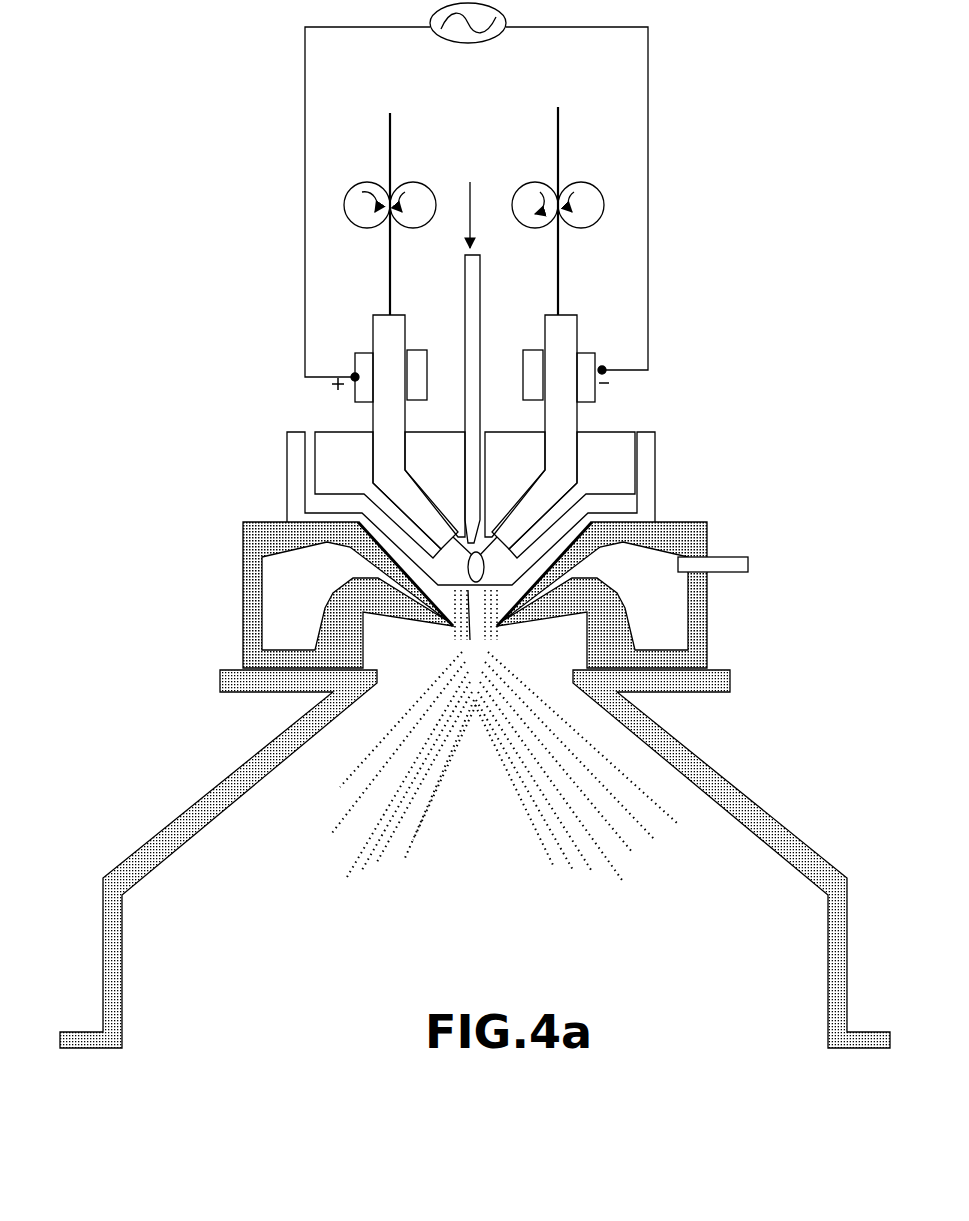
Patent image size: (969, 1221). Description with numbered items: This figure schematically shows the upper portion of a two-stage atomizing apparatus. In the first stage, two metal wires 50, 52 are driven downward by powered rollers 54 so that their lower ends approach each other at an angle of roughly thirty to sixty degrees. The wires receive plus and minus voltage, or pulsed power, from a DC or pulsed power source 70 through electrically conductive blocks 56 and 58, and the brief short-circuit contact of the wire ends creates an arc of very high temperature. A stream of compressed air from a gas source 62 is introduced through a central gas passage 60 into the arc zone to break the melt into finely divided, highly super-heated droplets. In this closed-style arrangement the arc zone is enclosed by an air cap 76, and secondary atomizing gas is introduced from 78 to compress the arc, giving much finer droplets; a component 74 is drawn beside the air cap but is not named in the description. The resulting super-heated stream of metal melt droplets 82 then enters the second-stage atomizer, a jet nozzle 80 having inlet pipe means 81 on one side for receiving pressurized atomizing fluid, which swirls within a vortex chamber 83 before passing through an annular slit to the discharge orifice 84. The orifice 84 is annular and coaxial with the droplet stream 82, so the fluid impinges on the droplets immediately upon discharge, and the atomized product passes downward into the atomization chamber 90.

The power source 70 is at (474, 45).
The metal wire 50 is at (387, 143).
The metal wire 52 is at (555, 143).
The powered rollers 54 is at (342, 224).
The gas source 62 is at (470, 201).
The gas passage 60 is at (484, 345).
The electrically conductive block 56 is at (357, 362).
The electrically conductive block 58 is at (595, 362).
The first insulating body 74 is at (345, 430).
The air cap 76 is at (663, 490).
The secondary atomizing gas inlet 78 is at (628, 428).
The jet nozzle 80 is at (724, 600).
The inlet pipe means 81 is at (721, 552).
The vortex chamber 83 is at (678, 628).
The stream of metal melt droplets 82 is at (463, 626).
The discharge orifice 84 is at (503, 630).
The atomization chamber 90 is at (819, 805).